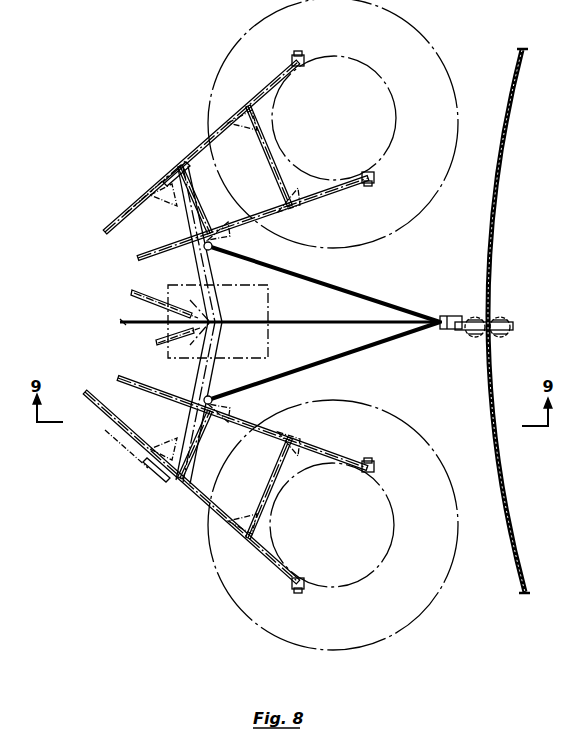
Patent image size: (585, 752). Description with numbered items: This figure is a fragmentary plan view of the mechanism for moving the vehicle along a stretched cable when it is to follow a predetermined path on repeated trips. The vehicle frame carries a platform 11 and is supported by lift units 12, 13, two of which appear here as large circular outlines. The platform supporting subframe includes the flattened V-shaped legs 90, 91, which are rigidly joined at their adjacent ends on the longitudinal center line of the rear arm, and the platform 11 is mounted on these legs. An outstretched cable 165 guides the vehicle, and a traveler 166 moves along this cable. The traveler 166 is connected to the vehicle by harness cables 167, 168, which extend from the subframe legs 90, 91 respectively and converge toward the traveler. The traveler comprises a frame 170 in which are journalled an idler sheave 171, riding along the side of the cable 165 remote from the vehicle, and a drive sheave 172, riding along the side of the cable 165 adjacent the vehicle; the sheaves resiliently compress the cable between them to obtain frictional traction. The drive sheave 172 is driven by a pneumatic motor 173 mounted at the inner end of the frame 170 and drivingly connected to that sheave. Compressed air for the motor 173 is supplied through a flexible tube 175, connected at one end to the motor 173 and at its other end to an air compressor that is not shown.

The platform 11 is at (270, 354).
The lift unit 12 is at (226, 56).
The lift unit 13 is at (210, 568).
The subframe leg 90 is at (190, 262).
The subframe leg 91 is at (192, 392).
The cable 165 is at (505, 504).
The traveler 166 is at (506, 316).
The harness cable 167 is at (322, 271).
The harness cable 168 is at (346, 366).
The traveler frame 170 is at (514, 327).
The idler sheave 171 is at (504, 337).
The drive sheave 172 is at (474, 316).
The pneumatic motor 173 is at (456, 331).
The flexible tube 175 is at (305, 321).